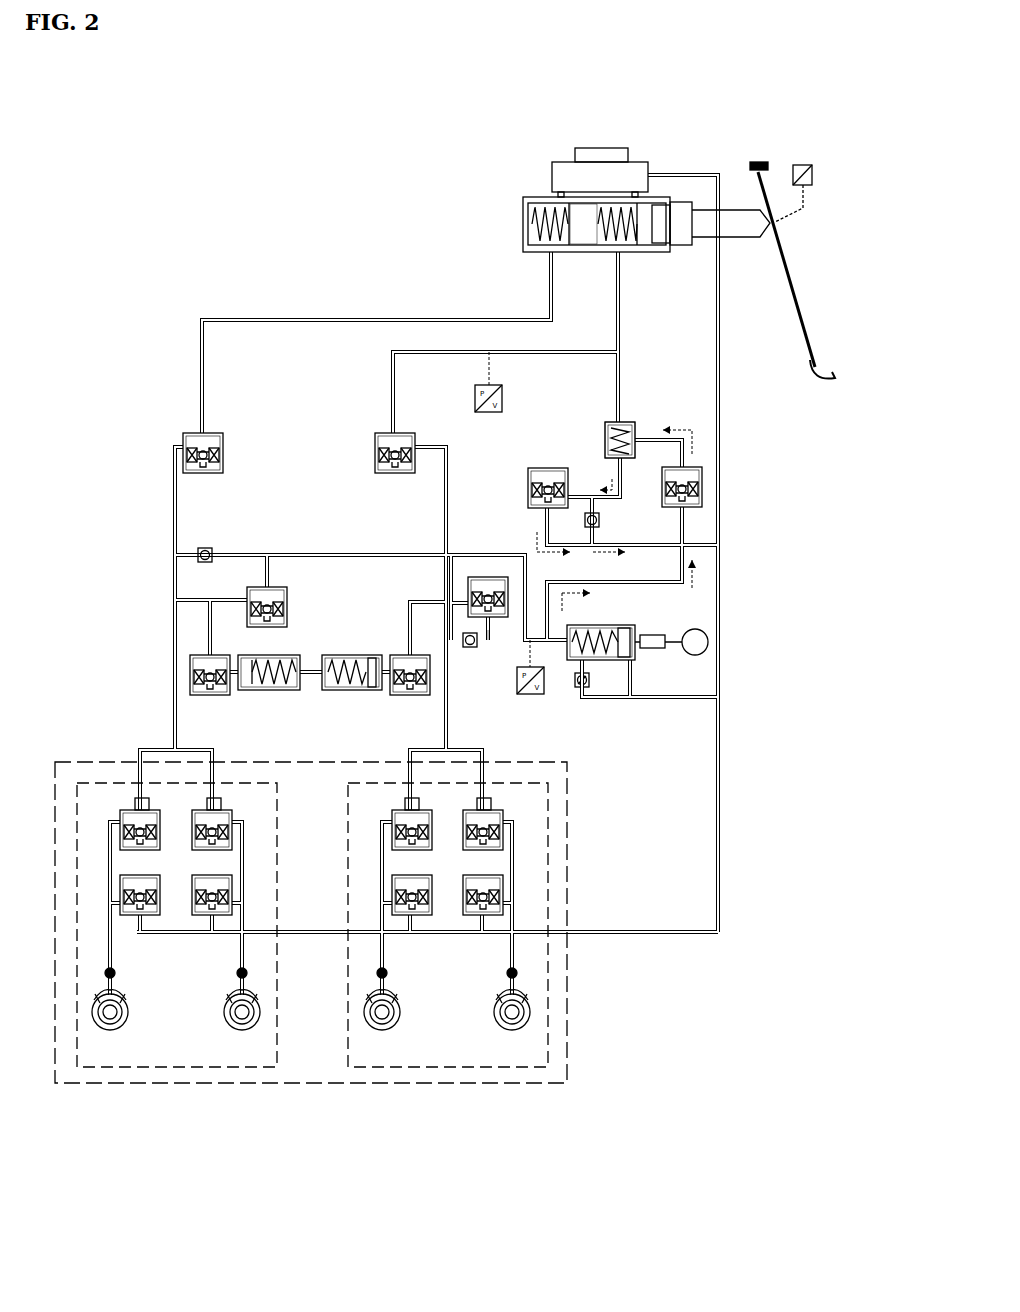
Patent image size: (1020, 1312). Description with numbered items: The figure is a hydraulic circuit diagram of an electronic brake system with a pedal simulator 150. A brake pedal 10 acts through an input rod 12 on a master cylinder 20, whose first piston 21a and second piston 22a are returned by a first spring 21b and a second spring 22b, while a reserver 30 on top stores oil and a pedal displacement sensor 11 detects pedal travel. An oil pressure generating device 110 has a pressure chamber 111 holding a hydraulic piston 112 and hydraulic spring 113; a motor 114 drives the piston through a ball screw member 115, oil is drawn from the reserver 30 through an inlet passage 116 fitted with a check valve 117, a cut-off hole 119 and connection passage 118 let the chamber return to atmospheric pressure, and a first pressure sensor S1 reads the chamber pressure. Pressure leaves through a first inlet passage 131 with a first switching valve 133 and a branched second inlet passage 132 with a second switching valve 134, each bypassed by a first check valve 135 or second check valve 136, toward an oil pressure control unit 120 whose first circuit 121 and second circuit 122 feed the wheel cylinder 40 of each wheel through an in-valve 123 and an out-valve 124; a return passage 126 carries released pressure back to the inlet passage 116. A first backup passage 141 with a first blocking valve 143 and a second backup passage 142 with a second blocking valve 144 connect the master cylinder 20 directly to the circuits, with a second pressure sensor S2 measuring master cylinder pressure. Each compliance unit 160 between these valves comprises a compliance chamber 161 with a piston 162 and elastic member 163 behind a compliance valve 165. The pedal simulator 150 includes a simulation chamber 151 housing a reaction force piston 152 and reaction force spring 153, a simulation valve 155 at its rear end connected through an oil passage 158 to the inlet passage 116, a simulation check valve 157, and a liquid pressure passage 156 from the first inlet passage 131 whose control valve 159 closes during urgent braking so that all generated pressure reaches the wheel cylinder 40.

The brake pedal 10 is at (792, 305).
The pedal displacement sensor 11 is at (805, 165).
The input rod 12 is at (745, 210).
The master cylinder 20 is at (523, 200).
The first piston 21a is at (660, 246).
The first spring 21b is at (625, 246).
The second piston 22a is at (582, 246).
The second spring 22b is at (536, 224).
The reserver 30 is at (575, 155).
The wheel cylinder 40 is at (230, 997).
The oil pressure generating device 110 is at (678, 683).
The pressure chamber 111 is at (600, 625).
The hydraulic piston 112 is at (632, 650).
The hydraulic spring 113 is at (577, 681).
The motor 114 is at (695, 656).
The ball screw member 115 is at (652, 628).
The inlet passage 116 is at (720, 523).
The check valve 117 is at (592, 698).
The connection passage 118 is at (640, 698).
The cut-off hole 119 is at (612, 699).
The oil pressure control unit 120 is at (311, 955).
The first circuit 121 is at (390, 1068).
The second circuit 122 is at (245, 1068).
The in-valve 123 is at (234, 822).
The out-valve 124 is at (234, 887).
The return passage 126 is at (623, 935).
The first inlet passage 131 is at (500, 643).
The second inlet passage 132 is at (490, 552).
The first switching valve 133 is at (468, 588).
The second switching valve 134 is at (287, 605).
The first check valve 135 is at (470, 650).
The second check valve 136 is at (207, 548).
The first backup passage 141 is at (540, 353).
The second backup passage 142 is at (358, 320).
The first blocking valve 143 is at (375, 447).
The second blocking valve 144 is at (223, 447).
The pedal simulator 150 is at (618, 406).
The simulation chamber 151 is at (636, 430).
The reaction force piston 152 is at (606, 425).
The reaction force spring 153 is at (605, 445).
The simulation valve 155 is at (545, 468).
The liquid pressure passage 156 is at (660, 580).
The simulation check valve 157 is at (600, 520).
The oil passage 158 is at (690, 530).
The control valve 159 is at (702, 475).
The compliance unit 160 is at (312, 703).
The compliance chamber 161 is at (330, 692).
The piston 162 is at (376, 691).
The elastic member 163 is at (352, 691).
The compliance valve 165 is at (415, 696).
The first pressure sensor S1 is at (531, 688).
The second pressure sensor S2 is at (488, 402).